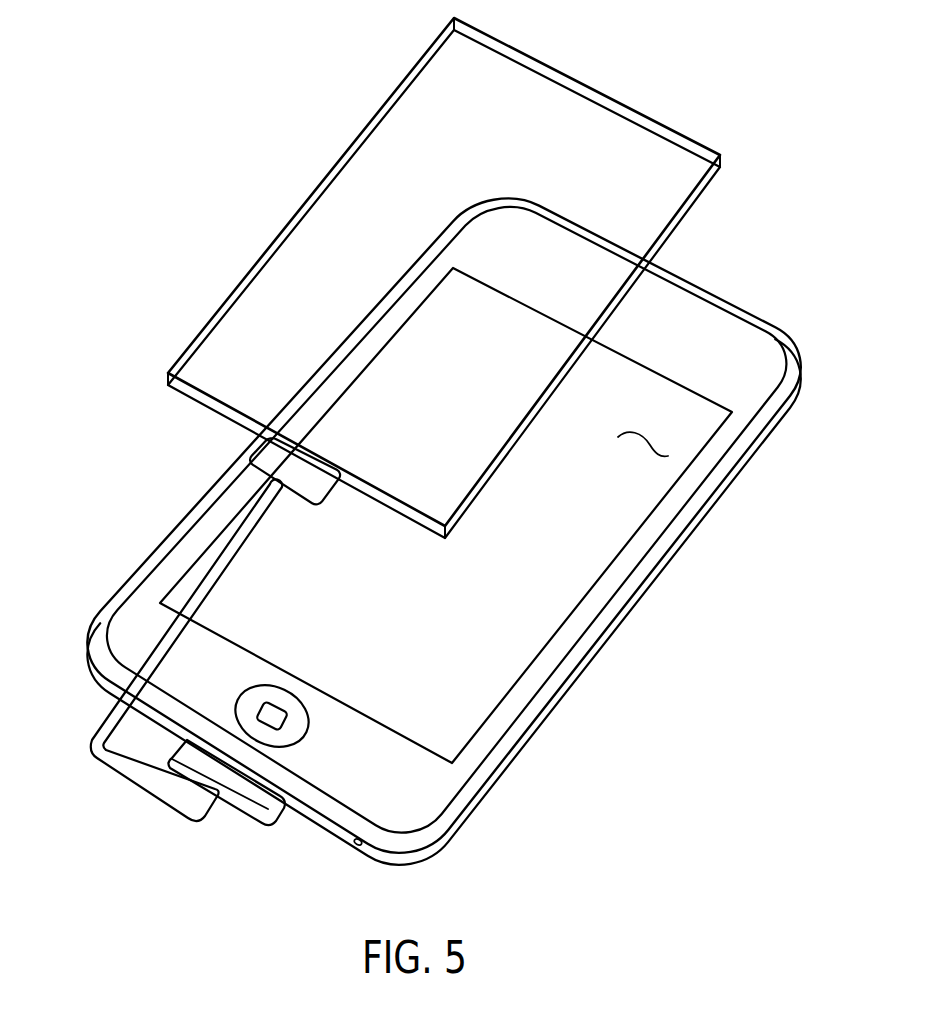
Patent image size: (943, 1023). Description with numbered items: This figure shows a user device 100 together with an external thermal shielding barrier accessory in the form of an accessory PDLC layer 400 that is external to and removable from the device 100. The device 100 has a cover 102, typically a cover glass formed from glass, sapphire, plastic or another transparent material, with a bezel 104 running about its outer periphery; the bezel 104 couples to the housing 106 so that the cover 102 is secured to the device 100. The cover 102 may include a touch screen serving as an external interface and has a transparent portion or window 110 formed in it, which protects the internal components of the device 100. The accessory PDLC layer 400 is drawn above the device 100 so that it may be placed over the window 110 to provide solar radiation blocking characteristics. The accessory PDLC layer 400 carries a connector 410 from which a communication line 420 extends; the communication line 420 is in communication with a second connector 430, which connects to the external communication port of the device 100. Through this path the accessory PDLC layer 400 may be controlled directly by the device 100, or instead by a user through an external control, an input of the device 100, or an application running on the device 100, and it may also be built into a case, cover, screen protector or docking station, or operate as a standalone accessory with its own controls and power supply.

The device 100 is at (443, 531).
The cover 102 is at (513, 628).
The bezel 104 is at (483, 788).
The housing 106 is at (688, 543).
The window 110 is at (650, 447).
The accessory PDLC layer 400 is at (373, 116).
The connector 410 is at (268, 457).
The communication line 420 is at (120, 778).
The connector 430 is at (253, 822).